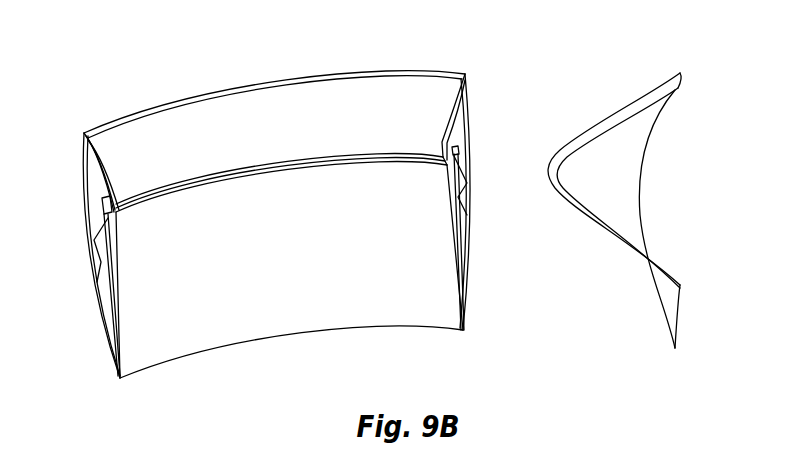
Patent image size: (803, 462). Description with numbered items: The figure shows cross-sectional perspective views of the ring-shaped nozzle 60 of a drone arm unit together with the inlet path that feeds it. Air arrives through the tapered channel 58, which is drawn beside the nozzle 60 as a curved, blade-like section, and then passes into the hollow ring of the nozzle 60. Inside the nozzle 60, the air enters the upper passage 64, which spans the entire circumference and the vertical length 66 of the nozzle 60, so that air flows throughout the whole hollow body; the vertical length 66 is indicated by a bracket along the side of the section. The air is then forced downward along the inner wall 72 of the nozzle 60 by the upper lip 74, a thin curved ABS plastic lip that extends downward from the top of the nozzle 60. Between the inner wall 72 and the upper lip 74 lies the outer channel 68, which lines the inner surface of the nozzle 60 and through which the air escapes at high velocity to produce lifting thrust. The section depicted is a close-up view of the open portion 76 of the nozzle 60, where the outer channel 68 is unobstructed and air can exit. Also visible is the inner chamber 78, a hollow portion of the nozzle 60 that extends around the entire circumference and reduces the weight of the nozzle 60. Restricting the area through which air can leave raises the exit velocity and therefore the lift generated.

The tapered channel 58 is at (600, 142).
The nozzle 60 is at (154, 58).
The upper passage 64 is at (96, 170).
The vertical length 66 is at (477, 80).
The outer channel 68 is at (111, 208).
The inner wall 72 is at (268, 313).
The upper lip 74 is at (275, 107).
The open portion 76 is at (47, 138).
The inner chamber 78 is at (100, 280).